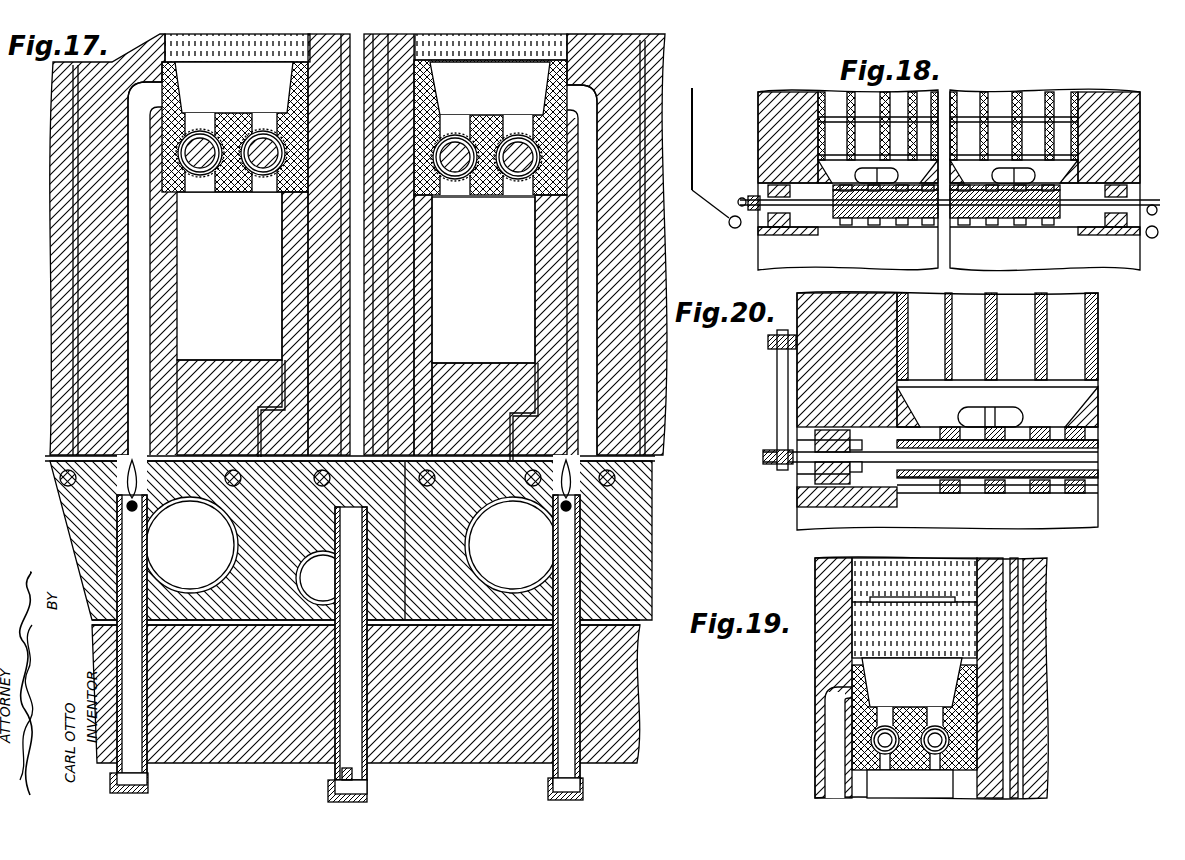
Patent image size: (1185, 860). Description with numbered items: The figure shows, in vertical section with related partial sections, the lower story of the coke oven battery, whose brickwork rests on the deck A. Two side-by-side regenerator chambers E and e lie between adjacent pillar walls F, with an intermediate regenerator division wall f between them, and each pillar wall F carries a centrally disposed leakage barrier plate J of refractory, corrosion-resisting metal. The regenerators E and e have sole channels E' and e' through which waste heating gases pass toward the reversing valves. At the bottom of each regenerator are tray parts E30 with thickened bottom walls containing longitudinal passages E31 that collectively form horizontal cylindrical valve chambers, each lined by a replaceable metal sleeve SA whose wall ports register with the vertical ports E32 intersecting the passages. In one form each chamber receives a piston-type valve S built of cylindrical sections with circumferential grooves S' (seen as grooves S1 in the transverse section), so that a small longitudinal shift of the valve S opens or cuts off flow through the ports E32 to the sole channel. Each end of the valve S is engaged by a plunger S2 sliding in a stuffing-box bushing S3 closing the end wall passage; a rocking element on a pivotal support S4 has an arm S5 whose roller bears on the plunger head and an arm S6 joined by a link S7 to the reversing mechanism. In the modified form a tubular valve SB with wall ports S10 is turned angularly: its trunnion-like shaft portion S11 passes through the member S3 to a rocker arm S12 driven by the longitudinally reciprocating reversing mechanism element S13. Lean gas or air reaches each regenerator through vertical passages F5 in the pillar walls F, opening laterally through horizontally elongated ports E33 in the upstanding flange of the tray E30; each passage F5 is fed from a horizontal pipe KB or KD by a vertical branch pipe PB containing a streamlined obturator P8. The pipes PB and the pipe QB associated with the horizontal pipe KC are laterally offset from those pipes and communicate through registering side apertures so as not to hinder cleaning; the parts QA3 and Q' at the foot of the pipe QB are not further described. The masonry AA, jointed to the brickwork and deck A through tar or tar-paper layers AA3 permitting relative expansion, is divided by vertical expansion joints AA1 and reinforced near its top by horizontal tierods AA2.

In FIG. 17, the regenerator chamber E is at (220, 39).
In FIG. 17, the horizontally elongated port E33 is at (176, 78).
In FIG. 18, the horizontally elongated port E33 is at (862, 168).
In FIG. 20, the horizontally elongated port E33 is at (1023, 414).
In FIG. 19, the horizontally elongated port E33 is at (852, 692).
In FIG. 17, the pillar wall F is at (66, 102).
In FIG. 17, the tray part E30 is at (170, 135).
In FIG. 18, the tray part E30 is at (825, 168).
In FIG. 20, the tray part E30 is at (1085, 412).
In FIG. 19, the tray part E30 is at (855, 712).
In FIG. 17, the passage E31 is at (176, 165).
In FIG. 18, the passage E31 is at (830, 230).
In FIG. 17, the leakage barrier plate J is at (74, 219).
In FIG. 17, the vertical passage F5 is at (130, 260).
In FIG. 19, the vertical passage F5 is at (830, 778).
In FIG. 17, the vertical port E32 is at (236, 113).
In FIG. 18, the vertical port E32 is at (862, 220).
In FIG. 20, the vertical port E32 is at (935, 485).
In FIG. 19, the vertical port E32 is at (883, 706).
In FIG. 17, the lining sleeve SA is at (200, 130).
In FIG. 18, the lining sleeve SA is at (960, 220).
In FIG. 20, the lining sleeve SA is at (910, 493).
In FIG. 19, the lining sleeve SA is at (949, 740).
In FIG. 17, the piston valve member S is at (327, 156).
In FIG. 18, the piston valve member S is at (946, 223).
In FIG. 17, the circumferentially extending grooves S' is at (390, 156).
In FIG. 17, the sole channel E' is at (242, 324).
In FIG. 17, the sole channel e' is at (499, 327).
In FIG. 17, the intermediate regenerator division wall f is at (283, 324).
In FIG. 17, the regenerator chamber e is at (552, 47).
In FIG. 17, the obturator P8 is at (86, 457).
In FIG. 17, the deck layer AA3 is at (658, 462).
In FIG. 17, the horizontal tierod AA2 is at (616, 488).
In FIG. 17, the masonry AA is at (648, 573).
In FIG. 17, the vertical expansion joint AA1 is at (410, 582).
In FIG. 17, the deck A is at (620, 683).
In FIG. 17, the horizontal pipe KD is at (190, 545).
In FIG. 17, the horizontal pipe KC is at (323, 578).
In FIG. 17, the horizontal pipe KB is at (513, 545).
In FIG. 17, the vertical branch pipe PB is at (148, 783).
In FIG. 17, the fitting QA3 is at (340, 780).
In FIG. 17, the pipe cap Q' is at (328, 795).
In FIG. 17, the vertical pipe QB is at (368, 783).
In FIG. 18, the circumferentially extending grooves S1 is at (890, 220).
In FIG. 18, the plunger S2 is at (795, 228).
In FIG. 18, the bushing S3 is at (765, 212).
In FIG. 20, the bushing S3 is at (815, 474).
In FIG. 18, the pivotal support S4 is at (730, 228).
In FIG. 18, the arm S5 is at (752, 197).
In FIG. 18, the arm S6 is at (706, 185).
In FIG. 18, the link S7 is at (697, 108).
In FIG. 20, the port S10 is at (1058, 480).
In FIG. 19, the port S10 is at (888, 725).
In FIG. 20, the trunnion-like shaft portion S11 is at (800, 456).
In FIG. 20, the rocker arm S12 is at (776, 392).
In FIG. 20, the reversing valve mechanism element S13 is at (773, 350).
In FIG. 20, the tubular valve SB is at (1088, 456).
In FIG. 19, the tubular valve SB is at (890, 772).